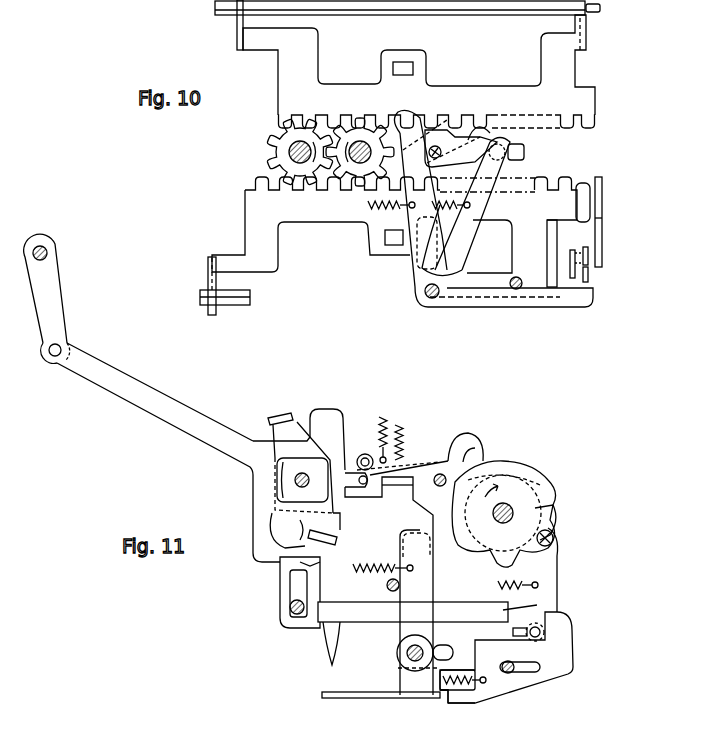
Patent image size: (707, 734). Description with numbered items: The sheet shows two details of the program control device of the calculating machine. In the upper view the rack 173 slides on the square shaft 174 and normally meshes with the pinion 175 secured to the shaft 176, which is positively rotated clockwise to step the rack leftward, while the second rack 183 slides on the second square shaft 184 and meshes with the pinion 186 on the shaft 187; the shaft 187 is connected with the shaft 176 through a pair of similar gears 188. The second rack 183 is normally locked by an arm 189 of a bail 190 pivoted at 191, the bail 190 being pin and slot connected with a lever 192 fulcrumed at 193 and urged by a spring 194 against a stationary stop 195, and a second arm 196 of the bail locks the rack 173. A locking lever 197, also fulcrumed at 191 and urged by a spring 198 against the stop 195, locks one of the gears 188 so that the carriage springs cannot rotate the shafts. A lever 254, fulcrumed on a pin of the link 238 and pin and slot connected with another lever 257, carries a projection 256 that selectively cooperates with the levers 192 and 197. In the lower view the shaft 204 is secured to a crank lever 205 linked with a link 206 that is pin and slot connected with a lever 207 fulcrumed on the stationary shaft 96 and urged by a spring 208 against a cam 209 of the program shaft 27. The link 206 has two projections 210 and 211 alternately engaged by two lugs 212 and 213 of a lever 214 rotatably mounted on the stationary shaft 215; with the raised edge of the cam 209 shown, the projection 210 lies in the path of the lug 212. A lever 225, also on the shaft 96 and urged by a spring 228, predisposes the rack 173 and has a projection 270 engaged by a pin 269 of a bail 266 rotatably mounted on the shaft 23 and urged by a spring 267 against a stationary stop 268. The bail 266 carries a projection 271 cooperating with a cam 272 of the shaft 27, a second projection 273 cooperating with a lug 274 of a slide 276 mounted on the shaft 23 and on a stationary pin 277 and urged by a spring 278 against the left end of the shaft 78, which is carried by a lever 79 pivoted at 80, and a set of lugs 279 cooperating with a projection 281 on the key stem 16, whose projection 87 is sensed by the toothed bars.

In FIG. 10, the second square shaft 184 is at (378, 12).
In FIG. 10, the second rack 183 is at (488, 93).
In FIG. 10, the pinion 186 is at (357, 113).
In FIG. 10, the shaft 187 is at (357, 141).
In FIG. 10, the shaft 176 is at (288, 150).
In FIG. 10, the pinion 175 is at (293, 188).
In FIG. 10, the square shaft 174 is at (250, 297).
In FIG. 10, the pair of similar gears 188 is at (347, 179).
In FIG. 10, the second arm 196 is at (388, 181).
In FIG. 10, the spring 198 is at (378, 211).
In FIG. 10, the locking lever 197 is at (420, 165).
In FIG. 10, the pivot 191 is at (435, 145).
In FIG. 10, the bail 190 is at (440, 133).
In FIG. 10, the arm 189 is at (480, 132).
In FIG. 10, the lever 192 is at (486, 206).
In FIG. 10, the spring 194 is at (442, 209).
In FIG. 10, the fulcrum 193 is at (433, 299).
In FIG. 10, the stationary stop 195 is at (517, 290).
In FIG. 10, the rack 173 is at (566, 198).
In FIG. 10, the link 238 is at (600, 230).
In FIG. 10, the lever 257 is at (573, 250).
In FIG. 10, the lever 254 is at (589, 252).
In FIG. 10, the projection 256 is at (589, 277).
In FIG. 11, the shaft 204 is at (47, 253).
In FIG. 11, the crank lever 205 is at (58, 300).
In FIG. 11, the link 206 is at (253, 441).
In FIG. 11, the lug 212 is at (278, 413).
In FIG. 11, the projection 210 is at (311, 410).
In FIG. 11, the spring 228 is at (380, 445).
In FIG. 11, the spring 208 is at (399, 458).
In FIG. 11, the lever 225 is at (403, 463).
In FIG. 11, the stationary shaft 96 is at (441, 474).
In FIG. 11, the lever 207 is at (397, 490).
In FIG. 11, the cam 209 is at (500, 463).
In FIG. 11, the cam 272 is at (530, 478).
In FIG. 11, the program shaft 27 is at (513, 511).
In FIG. 11, the projection 271 is at (542, 523).
In FIG. 11, the pivot 80 is at (553, 540).
In FIG. 11, the lever 79 is at (558, 570).
In FIG. 11, the stationary shaft 215 is at (297, 481).
In FIG. 11, the lever 214 is at (330, 520).
In FIG. 11, the lug 213 is at (330, 538).
In FIG. 11, the projection 270 is at (398, 494).
In FIG. 11, the pin 269 is at (435, 575).
In FIG. 11, the projection 211 is at (310, 572).
In FIG. 11, the key stem 16 is at (315, 583).
In FIG. 11, the spring 267 is at (370, 574).
In FIG. 11, the stationary stop 268 is at (393, 591).
In FIG. 11, the slide 276 is at (480, 640).
In FIG. 11, the projection 87 is at (527, 604).
In FIG. 11, the shaft 78 is at (541, 631).
In FIG. 11, the projection 281 is at (336, 648).
In FIG. 11, the shaft 23 is at (408, 662).
In FIG. 11, the spring 278 is at (455, 674).
In FIG. 11, the stationary pin 277 is at (512, 672).
In FIG. 11, the lug 274 is at (462, 700).
In FIG. 11, the second projection 273 is at (442, 698).
In FIG. 11, the bail 266 is at (405, 698).
In FIG. 11, the lugs 279 is at (330, 698).